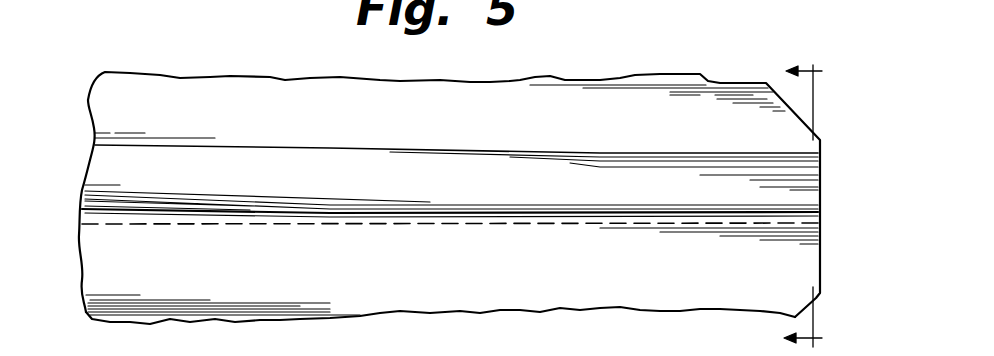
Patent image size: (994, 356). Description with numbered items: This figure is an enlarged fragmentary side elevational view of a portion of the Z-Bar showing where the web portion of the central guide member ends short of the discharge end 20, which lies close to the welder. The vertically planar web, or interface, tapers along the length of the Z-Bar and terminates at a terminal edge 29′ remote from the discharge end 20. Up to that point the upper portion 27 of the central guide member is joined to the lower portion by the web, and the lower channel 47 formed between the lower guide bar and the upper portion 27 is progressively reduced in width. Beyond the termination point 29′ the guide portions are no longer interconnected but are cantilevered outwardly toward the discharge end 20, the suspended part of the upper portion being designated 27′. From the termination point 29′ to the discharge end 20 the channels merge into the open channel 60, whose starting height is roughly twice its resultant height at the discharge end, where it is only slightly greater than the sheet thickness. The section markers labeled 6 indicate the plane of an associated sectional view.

The discharge end 20 is at (818, 254).
The upper portion 27 is at (105, 167).
The cantilevered portion 27′ is at (818, 181).
The lower channel 47 is at (82, 210).
The open channel 60 is at (818, 216).
The terminal edge 29′ is at (512, 222).
The section line for FIG. 6 is at (811, 206).